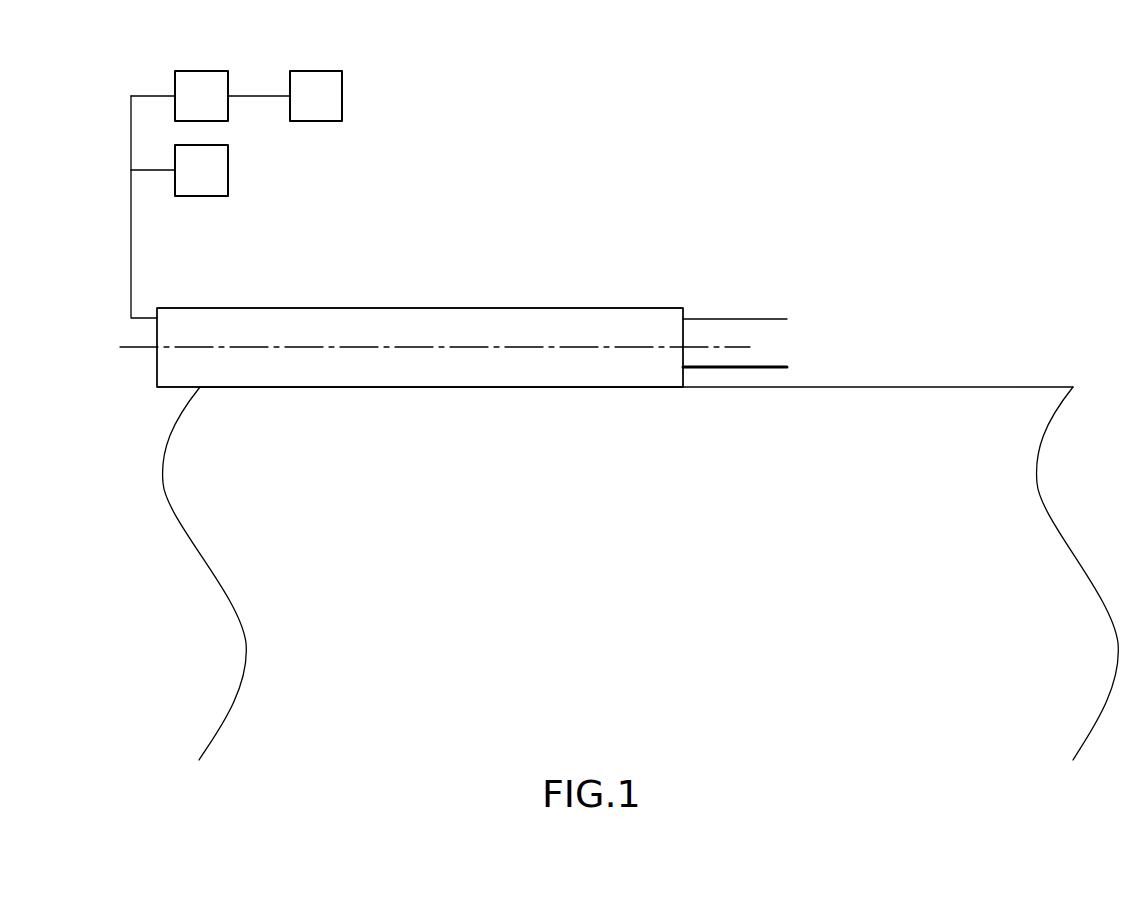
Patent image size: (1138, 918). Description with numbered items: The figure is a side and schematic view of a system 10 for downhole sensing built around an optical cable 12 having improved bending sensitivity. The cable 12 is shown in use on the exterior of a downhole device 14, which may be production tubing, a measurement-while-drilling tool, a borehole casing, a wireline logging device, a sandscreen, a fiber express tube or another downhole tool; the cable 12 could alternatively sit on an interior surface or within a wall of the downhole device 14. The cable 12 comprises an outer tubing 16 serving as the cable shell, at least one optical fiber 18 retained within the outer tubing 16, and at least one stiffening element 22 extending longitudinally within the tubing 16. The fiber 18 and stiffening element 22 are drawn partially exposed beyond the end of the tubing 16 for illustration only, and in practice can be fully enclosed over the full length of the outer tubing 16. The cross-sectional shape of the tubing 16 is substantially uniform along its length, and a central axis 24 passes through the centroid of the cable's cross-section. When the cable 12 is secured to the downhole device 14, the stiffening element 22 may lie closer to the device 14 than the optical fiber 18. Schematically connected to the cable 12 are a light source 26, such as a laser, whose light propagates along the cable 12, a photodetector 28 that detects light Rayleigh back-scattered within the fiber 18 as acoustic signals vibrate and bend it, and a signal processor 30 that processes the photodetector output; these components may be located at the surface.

The system for downhole sensing 10 is at (875, 262).
The optical cable 12 is at (567, 308).
The downhole device 14 is at (1036, 387).
The outer tubing 16 is at (385, 323).
The optical fiber 18 is at (752, 318).
The stiffening element 22 is at (768, 366).
The central axis 24 is at (128, 350).
The light source 26 is at (215, 183).
The photodetector 28 is at (215, 109).
The signal processor 30 is at (330, 109).